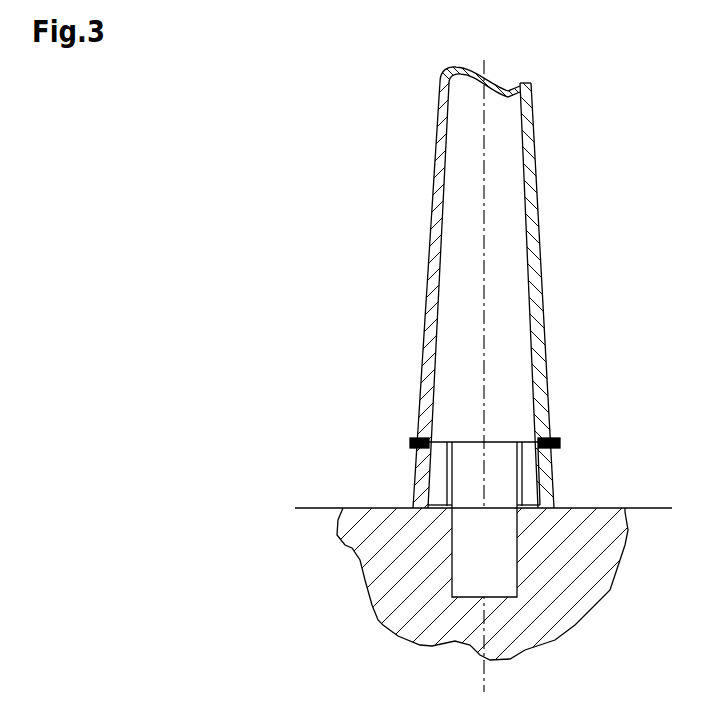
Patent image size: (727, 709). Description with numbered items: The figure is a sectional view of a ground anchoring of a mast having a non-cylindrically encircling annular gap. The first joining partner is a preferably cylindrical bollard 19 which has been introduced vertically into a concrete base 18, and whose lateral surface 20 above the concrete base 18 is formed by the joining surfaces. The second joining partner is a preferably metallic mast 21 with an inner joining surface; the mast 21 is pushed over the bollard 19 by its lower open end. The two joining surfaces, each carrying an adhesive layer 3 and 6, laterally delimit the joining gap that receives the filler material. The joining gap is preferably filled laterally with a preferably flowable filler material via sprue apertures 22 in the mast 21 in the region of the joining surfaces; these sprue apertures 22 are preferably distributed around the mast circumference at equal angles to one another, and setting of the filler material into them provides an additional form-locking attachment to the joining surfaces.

The adhesive layer 3 is at (537, 438).
The adhesive layer 6 is at (543, 462).
The concrete base 18 is at (585, 578).
The bollard 19 is at (500, 587).
The lateral surface 20 is at (522, 532).
The mast 21 is at (543, 362).
The sprue apertures 22 is at (410, 440).